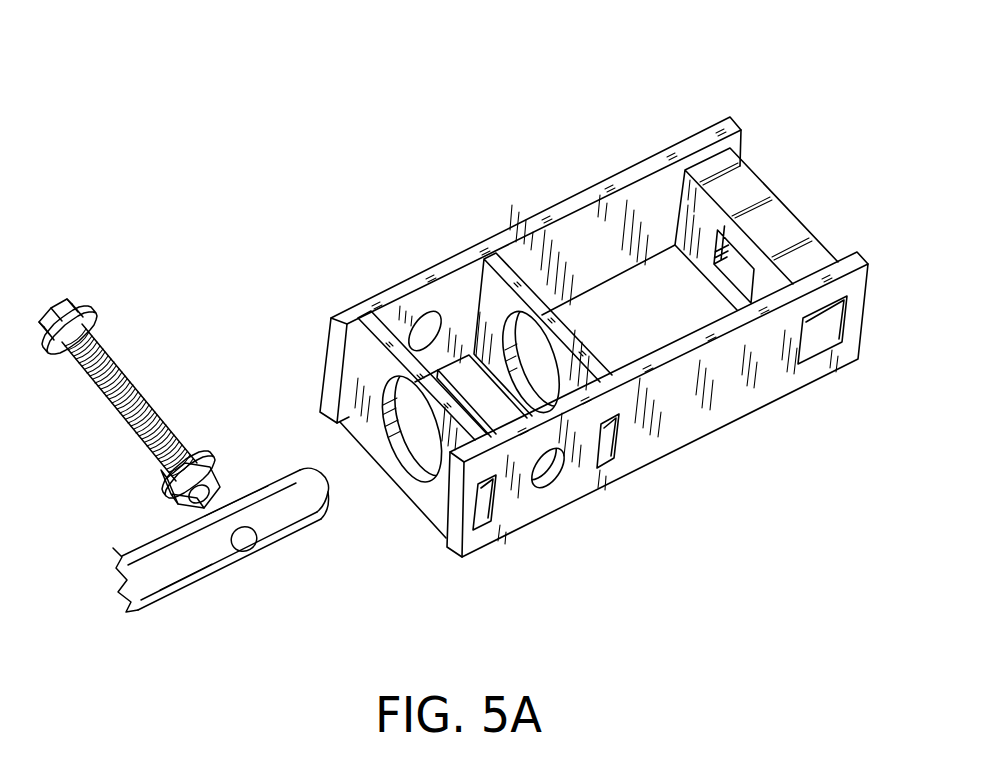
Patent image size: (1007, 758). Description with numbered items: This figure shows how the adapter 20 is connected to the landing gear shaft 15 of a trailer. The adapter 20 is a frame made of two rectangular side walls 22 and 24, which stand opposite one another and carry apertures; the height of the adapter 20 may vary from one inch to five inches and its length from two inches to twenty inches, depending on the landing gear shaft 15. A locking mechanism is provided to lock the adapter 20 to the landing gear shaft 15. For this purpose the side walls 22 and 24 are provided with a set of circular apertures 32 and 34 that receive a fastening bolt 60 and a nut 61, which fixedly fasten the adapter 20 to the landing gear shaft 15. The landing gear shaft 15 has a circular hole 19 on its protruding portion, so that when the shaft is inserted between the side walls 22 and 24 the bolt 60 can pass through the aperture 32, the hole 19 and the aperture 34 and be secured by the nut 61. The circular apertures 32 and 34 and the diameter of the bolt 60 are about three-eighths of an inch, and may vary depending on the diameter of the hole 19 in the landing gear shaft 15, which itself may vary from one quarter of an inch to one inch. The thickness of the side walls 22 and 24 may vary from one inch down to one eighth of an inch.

The landing gear shaft 15 is at (177, 596).
The circular hole 19 is at (251, 541).
The adapter 20 is at (741, 93).
The side wall 22 is at (573, 197).
The side wall 24 is at (678, 408).
The circular aperture 32 is at (400, 312).
The circular aperture 34 is at (543, 477).
The fastening bolt 60 is at (133, 378).
The nut 61 is at (214, 473).